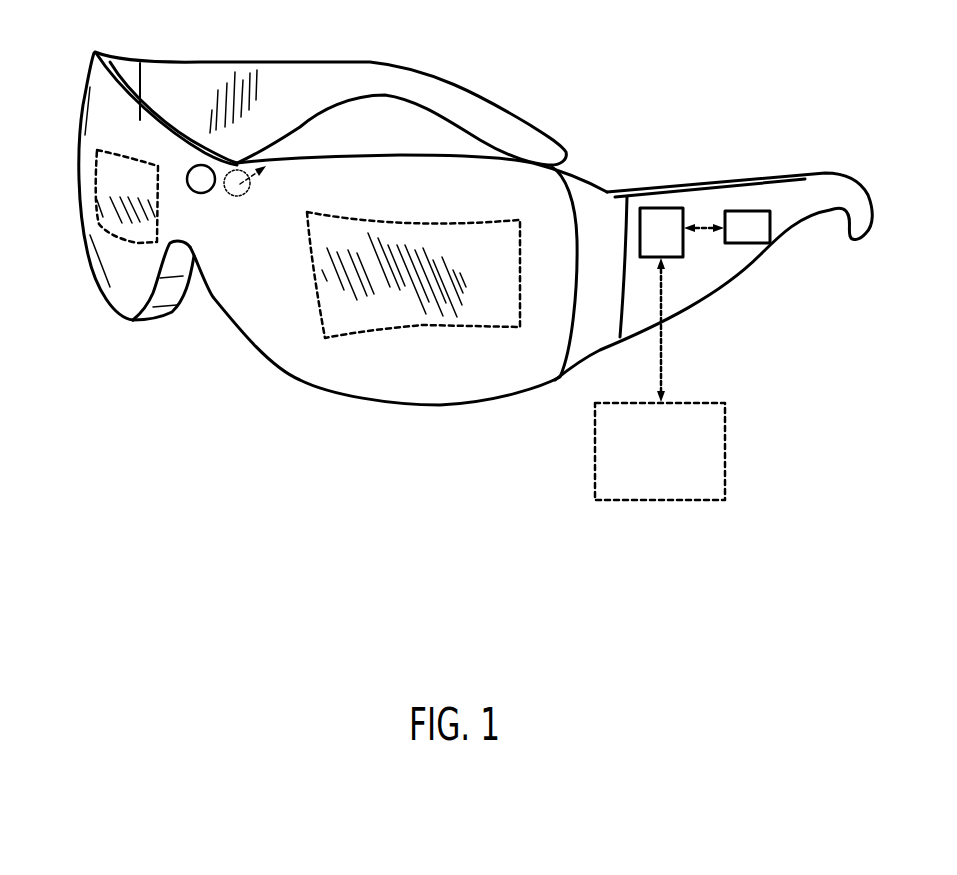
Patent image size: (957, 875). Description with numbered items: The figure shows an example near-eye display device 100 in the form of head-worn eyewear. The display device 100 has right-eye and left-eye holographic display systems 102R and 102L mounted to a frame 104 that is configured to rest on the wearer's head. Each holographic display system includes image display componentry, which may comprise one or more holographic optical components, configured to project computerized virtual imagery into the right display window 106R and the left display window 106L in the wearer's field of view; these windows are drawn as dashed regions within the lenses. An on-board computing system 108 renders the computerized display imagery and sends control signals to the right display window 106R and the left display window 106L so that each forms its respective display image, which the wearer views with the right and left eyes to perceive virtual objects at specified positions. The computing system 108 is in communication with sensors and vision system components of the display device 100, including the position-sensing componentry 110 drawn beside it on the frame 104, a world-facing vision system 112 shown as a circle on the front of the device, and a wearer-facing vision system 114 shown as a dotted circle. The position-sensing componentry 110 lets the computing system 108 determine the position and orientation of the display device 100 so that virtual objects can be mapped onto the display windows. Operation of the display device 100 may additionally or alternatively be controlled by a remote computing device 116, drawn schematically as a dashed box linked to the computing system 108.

The near-eye display device 100 is at (507, 50).
The right-eye holographic display system 102R is at (116, 249).
The left-eye holographic display system 102L is at (456, 343).
The frame 104 is at (573, 177).
The right display window 106R is at (187, 180).
The left display window 106L is at (507, 259).
The on-board computing system 108 is at (657, 207).
The position-sensing componentry 110 is at (743, 211).
The world-facing vision system 112 is at (194, 192).
The wearer-facing vision system 114 is at (251, 188).
The remote computing device 116 is at (712, 489).